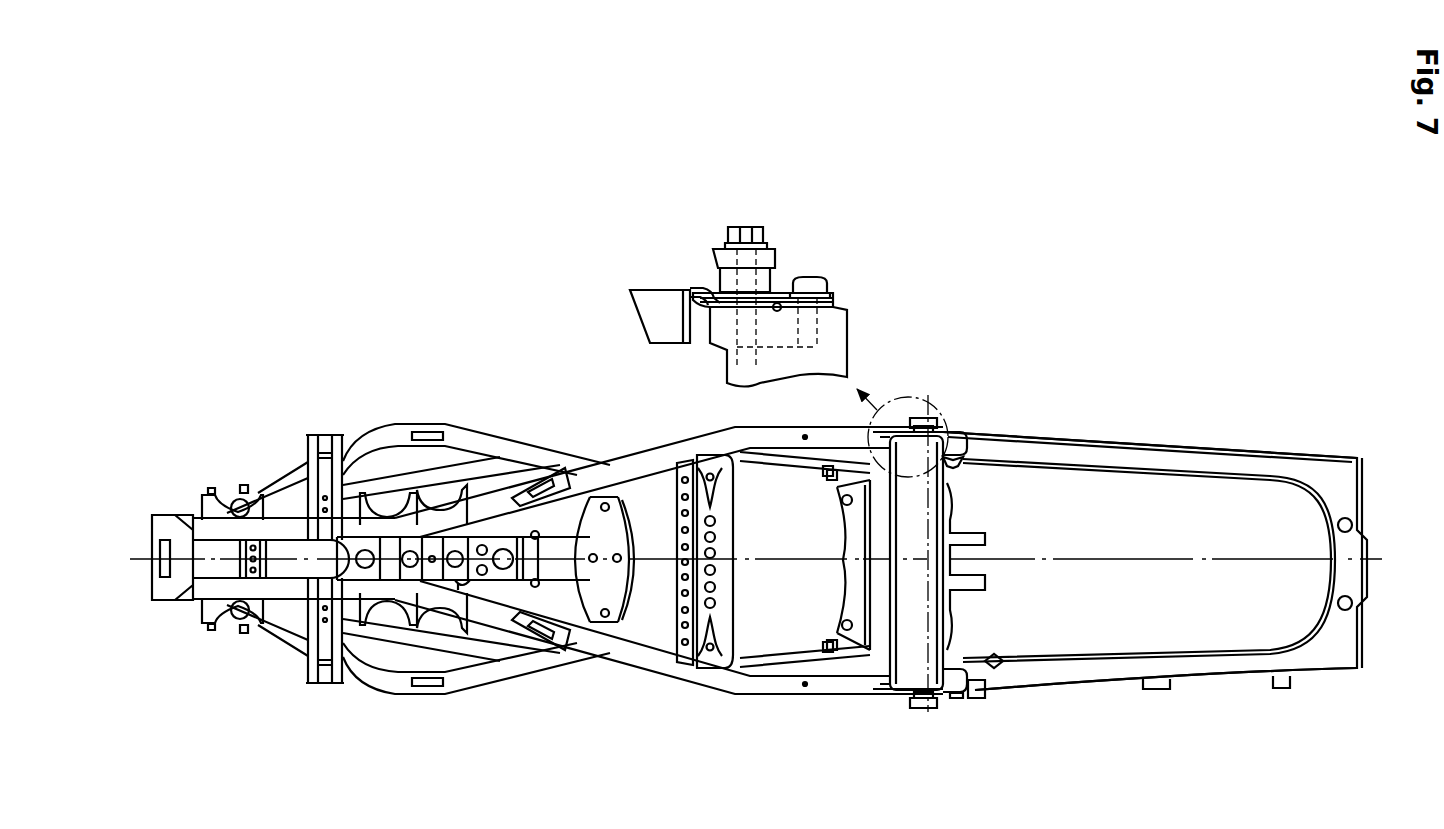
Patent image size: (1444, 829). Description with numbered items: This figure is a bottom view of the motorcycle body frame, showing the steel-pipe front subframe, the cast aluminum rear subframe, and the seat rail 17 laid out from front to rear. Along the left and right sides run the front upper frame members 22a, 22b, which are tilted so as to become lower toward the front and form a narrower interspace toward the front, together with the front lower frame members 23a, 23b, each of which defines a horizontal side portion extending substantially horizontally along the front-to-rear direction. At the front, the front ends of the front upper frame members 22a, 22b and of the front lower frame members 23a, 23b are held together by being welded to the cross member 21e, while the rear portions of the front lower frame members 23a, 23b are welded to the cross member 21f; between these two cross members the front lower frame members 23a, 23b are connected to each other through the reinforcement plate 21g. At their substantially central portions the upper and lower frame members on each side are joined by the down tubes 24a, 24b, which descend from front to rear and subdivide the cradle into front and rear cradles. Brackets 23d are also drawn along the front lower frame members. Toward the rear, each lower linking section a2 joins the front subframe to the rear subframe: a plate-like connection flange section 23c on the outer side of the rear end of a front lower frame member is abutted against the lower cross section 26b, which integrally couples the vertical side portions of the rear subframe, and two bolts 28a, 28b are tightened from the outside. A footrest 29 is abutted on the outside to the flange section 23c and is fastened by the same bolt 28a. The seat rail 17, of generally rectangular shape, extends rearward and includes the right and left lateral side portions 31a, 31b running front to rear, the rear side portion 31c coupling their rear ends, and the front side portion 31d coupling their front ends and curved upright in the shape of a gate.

The seat rail 17 is at (1155, 552).
The cross member 21e is at (182, 547).
The cross member 21f is at (730, 537).
The reinforcement plate 21g is at (463, 585).
The front upper frame member 22a is at (500, 450).
The front upper frame member 22b is at (507, 670).
The front lower frame member 23a is at (608, 472).
The front lower frame member 23b is at (623, 650).
The connection flange section 23c is at (833, 297).
The clamp bracket 23d is at (200, 497).
The down tube 24a is at (388, 475).
The down tube 24b is at (390, 643).
The lower cross section 26b is at (947, 515).
The bolt 28a is at (767, 233).
The bolt 28b is at (813, 275).
The footrest 29 is at (712, 247).
The lateral side portion 31a is at (1100, 433).
The lateral side portion 31b is at (1097, 687).
The rear side portion 31c is at (1327, 583).
The front side portion 31d is at (843, 573).
The lower linking section a2 is at (690, 265).